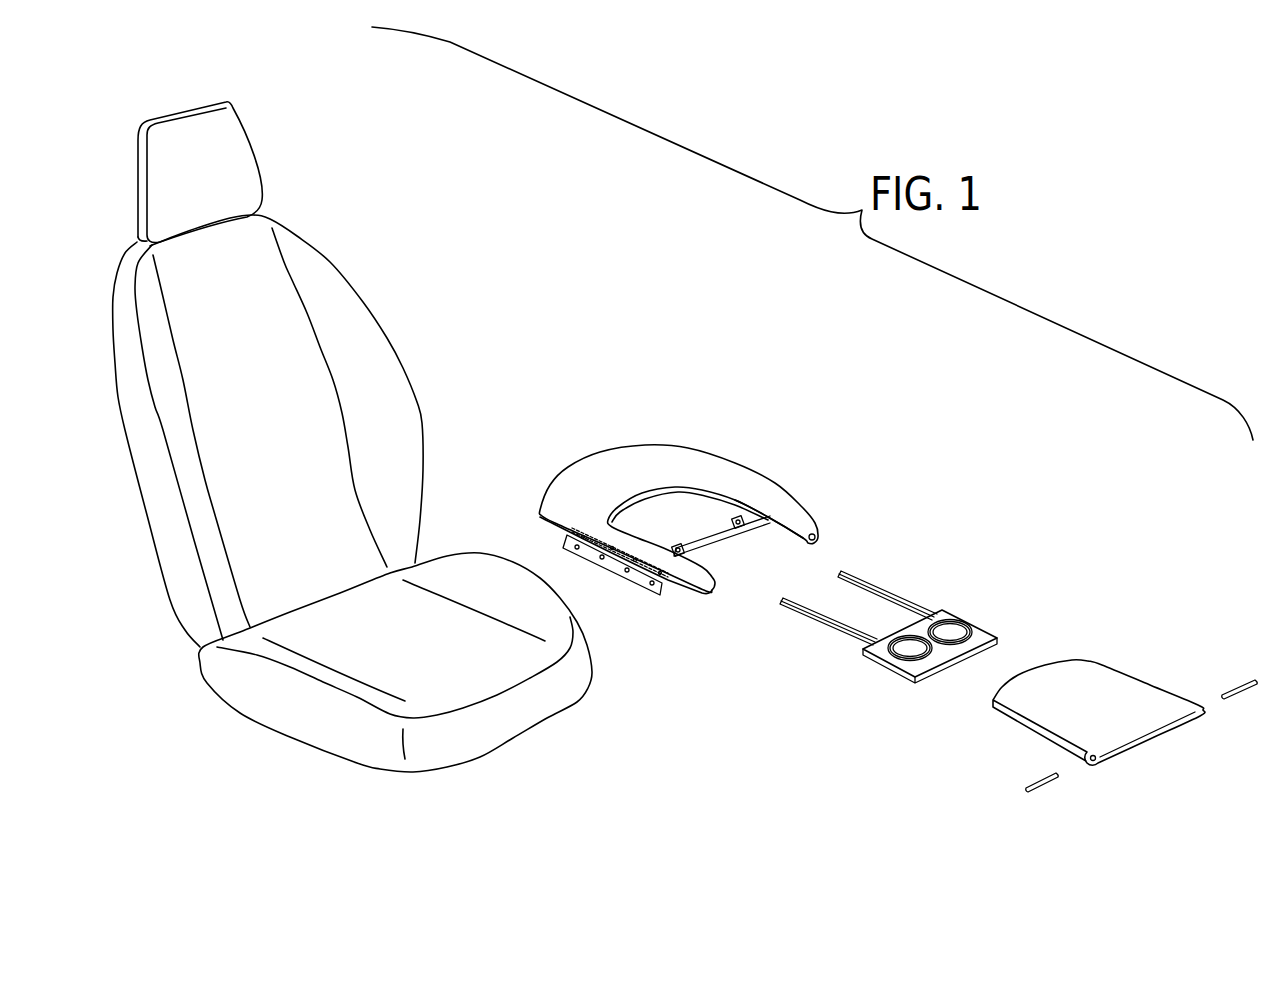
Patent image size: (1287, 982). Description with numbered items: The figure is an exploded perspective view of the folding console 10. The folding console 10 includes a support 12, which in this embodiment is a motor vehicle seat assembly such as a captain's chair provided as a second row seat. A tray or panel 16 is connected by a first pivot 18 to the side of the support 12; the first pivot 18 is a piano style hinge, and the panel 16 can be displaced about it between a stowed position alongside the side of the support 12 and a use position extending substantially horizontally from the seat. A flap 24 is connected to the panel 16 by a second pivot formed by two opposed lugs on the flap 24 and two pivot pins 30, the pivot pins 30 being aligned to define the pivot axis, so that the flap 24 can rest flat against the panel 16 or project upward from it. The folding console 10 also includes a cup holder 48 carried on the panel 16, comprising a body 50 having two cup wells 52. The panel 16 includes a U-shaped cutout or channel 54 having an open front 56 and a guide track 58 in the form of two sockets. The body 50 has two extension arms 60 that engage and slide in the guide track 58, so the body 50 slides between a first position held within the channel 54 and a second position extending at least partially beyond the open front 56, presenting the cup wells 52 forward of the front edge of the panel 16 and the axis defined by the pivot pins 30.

The folding console 10 is at (1045, 455).
The support 12 is at (303, 707).
The panel 16 is at (597, 480).
The first pivot 18 is at (636, 583).
The flap 24 is at (1113, 692).
The pivot pins 30 is at (1055, 780).
The cup holder 48 is at (914, 633).
The body 50 is at (987, 630).
The cup wells 52 is at (950, 618).
The channel 54 is at (765, 528).
The open front 56 is at (735, 587).
The guide track 58 is at (738, 518).
The extension arms 60 is at (880, 586).